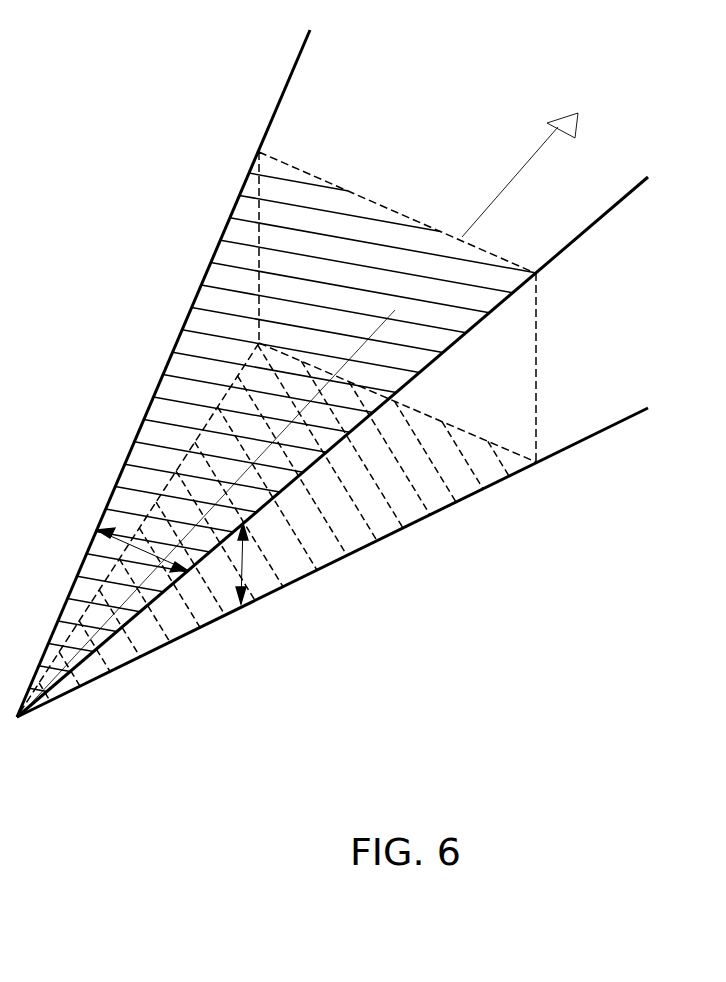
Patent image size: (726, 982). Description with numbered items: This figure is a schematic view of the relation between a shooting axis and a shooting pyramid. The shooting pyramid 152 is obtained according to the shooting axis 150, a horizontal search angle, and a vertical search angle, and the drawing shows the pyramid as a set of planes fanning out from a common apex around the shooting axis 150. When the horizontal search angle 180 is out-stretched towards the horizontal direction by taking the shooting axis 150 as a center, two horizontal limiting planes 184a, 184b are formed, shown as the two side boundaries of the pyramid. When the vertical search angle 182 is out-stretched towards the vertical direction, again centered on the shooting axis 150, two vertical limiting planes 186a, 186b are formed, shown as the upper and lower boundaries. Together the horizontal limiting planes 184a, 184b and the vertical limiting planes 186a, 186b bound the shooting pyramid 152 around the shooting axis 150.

The shooting axis 150 is at (538, 153).
The shooting pyramid 152 is at (600, 398).
The horizontal search angle 180 is at (150, 550).
The vertical search angle 182 is at (243, 557).
The horizontal limiting plane 184a is at (334, 523).
The horizontal limiting plane 184b is at (332, 373).
The vertical limiting plane 186a is at (342, 250).
The vertical limiting plane 186b is at (327, 513).